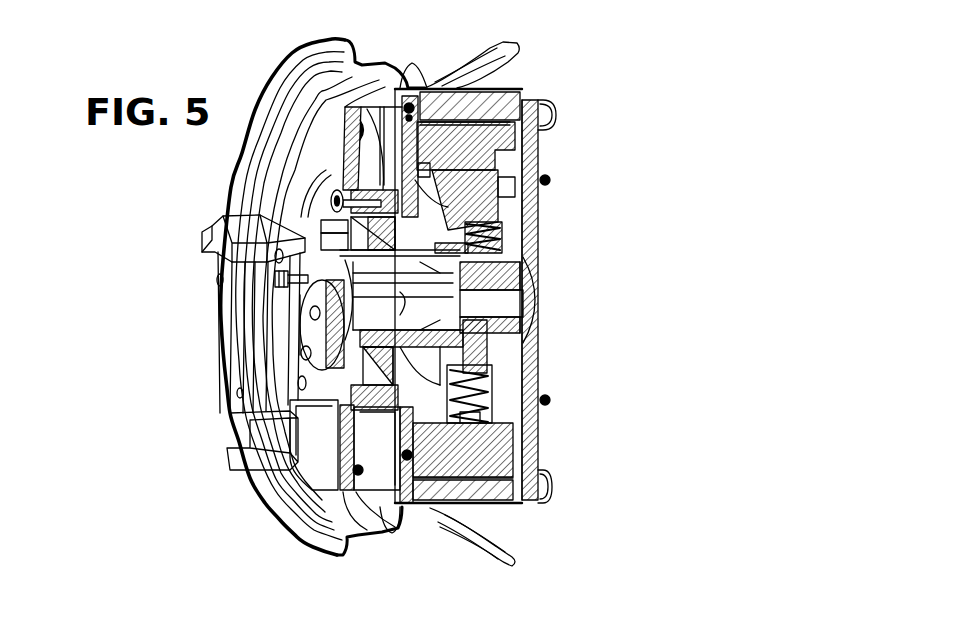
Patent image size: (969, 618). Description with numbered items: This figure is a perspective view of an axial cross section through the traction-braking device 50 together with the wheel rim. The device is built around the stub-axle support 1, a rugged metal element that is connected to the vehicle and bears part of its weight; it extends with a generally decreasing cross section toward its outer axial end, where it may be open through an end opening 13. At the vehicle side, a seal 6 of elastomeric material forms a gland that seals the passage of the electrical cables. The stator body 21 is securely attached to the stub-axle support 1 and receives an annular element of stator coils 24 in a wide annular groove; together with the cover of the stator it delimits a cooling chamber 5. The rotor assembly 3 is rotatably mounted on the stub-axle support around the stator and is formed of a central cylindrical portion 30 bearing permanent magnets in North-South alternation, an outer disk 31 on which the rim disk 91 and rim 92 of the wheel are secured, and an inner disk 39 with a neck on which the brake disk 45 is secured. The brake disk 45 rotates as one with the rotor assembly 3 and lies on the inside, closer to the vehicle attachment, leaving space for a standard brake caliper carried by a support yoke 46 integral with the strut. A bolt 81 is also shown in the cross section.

The stub-axle support 1 is at (303, 232).
The rotor assembly 3 is at (512, 503).
The cooling chamber 5 is at (537, 385).
The seal 6 is at (313, 333).
The end opening 13 is at (523, 297).
The stator body 21 is at (477, 213).
The stator coils 24 is at (502, 152).
The central cylindrical portion 30 is at (433, 490).
The outer disk 31 is at (543, 477).
The inner disk 39 is at (388, 477).
The brake disk 45 is at (320, 460).
The support yoke 46 is at (233, 457).
The traction-braking device 50 is at (577, 295).
The bolt 81 is at (275, 277).
The rim disk 91 is at (553, 108).
The rim 92 is at (515, 53).